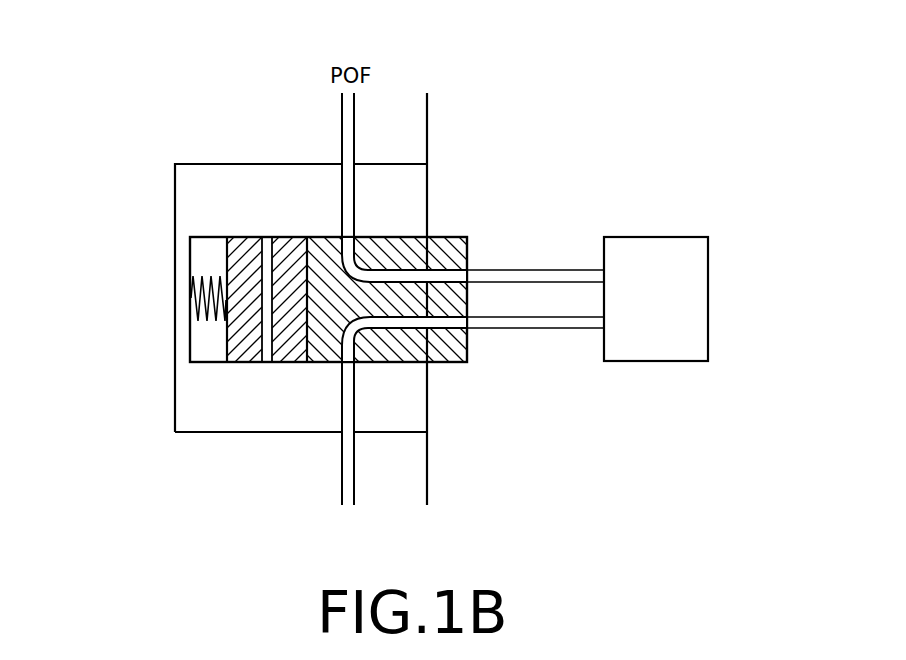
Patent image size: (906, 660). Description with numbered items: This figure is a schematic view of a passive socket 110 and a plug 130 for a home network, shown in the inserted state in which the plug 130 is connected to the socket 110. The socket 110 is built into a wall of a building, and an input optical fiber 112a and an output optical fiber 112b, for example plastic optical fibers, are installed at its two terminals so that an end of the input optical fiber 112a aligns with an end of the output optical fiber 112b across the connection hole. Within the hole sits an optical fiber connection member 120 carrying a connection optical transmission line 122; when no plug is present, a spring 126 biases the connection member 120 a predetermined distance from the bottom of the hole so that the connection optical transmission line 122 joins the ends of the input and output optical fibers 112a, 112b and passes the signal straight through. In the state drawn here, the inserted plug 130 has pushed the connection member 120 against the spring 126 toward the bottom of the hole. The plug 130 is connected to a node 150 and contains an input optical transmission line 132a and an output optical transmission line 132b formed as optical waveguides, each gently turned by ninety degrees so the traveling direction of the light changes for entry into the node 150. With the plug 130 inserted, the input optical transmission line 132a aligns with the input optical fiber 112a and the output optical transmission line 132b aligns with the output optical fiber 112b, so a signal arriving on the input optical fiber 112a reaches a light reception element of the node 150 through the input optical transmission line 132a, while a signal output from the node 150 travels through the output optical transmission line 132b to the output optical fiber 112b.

The passive socket 110 is at (412, 172).
The input optical fiber 112a is at (347, 182).
The output optical fiber 112b is at (347, 478).
The optical fiber connection member 120 is at (228, 350).
The connection optical transmission line 122 is at (266, 357).
The spring 126 is at (191, 283).
The plug 130 is at (446, 237).
The input optical transmission line 132a is at (405, 268).
The output optical transmission line 132b is at (408, 336).
The node 150 is at (656, 237).